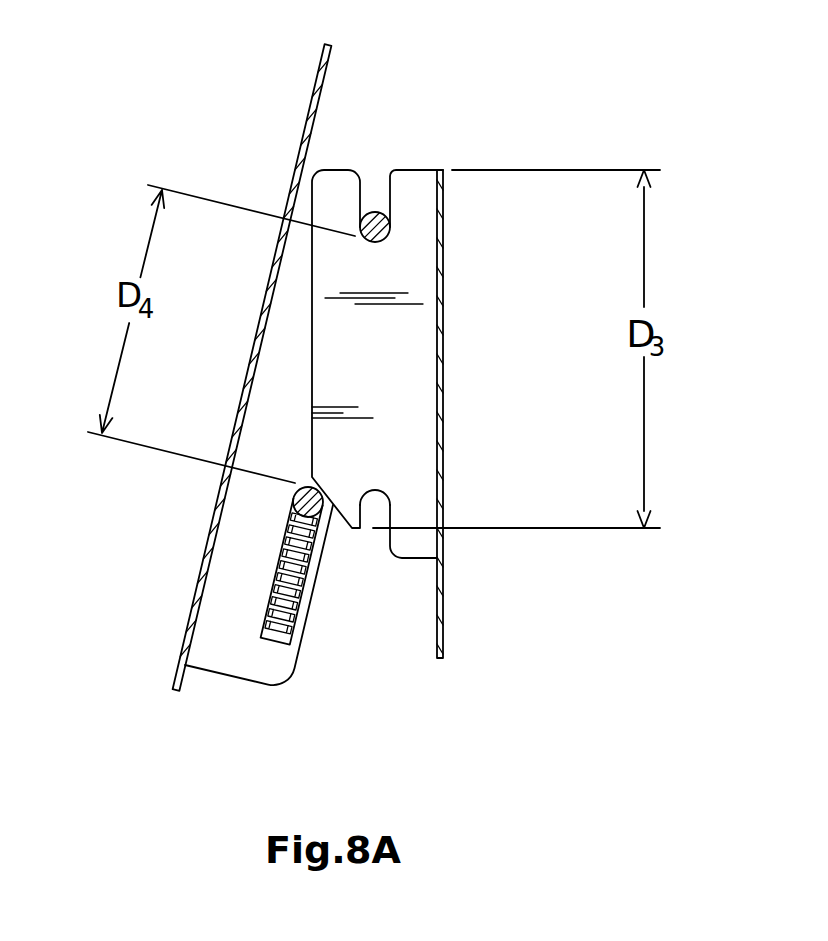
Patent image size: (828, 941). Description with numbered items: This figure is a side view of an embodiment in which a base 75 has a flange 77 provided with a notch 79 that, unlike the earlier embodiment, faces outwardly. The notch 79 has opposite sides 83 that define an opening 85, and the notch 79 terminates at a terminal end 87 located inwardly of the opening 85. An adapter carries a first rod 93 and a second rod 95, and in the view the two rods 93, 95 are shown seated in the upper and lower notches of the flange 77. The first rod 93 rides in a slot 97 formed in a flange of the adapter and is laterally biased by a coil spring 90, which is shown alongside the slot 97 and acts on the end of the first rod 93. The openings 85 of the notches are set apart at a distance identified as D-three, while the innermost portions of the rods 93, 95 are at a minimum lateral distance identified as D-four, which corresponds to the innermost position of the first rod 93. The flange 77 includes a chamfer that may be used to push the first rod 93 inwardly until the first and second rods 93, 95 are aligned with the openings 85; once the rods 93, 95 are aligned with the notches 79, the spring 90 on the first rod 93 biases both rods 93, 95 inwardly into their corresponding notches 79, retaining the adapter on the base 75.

The base 75 is at (442, 394).
The flange 77 is at (420, 183).
The notch 79 is at (368, 518).
The opposite sides 83 is at (390, 512).
The opening 85 is at (385, 517).
The terminal end 87 is at (378, 490).
The coil spring 90 is at (300, 617).
The first rod 93 is at (297, 487).
The second rod 95 is at (364, 240).
The slot 97 is at (287, 515).